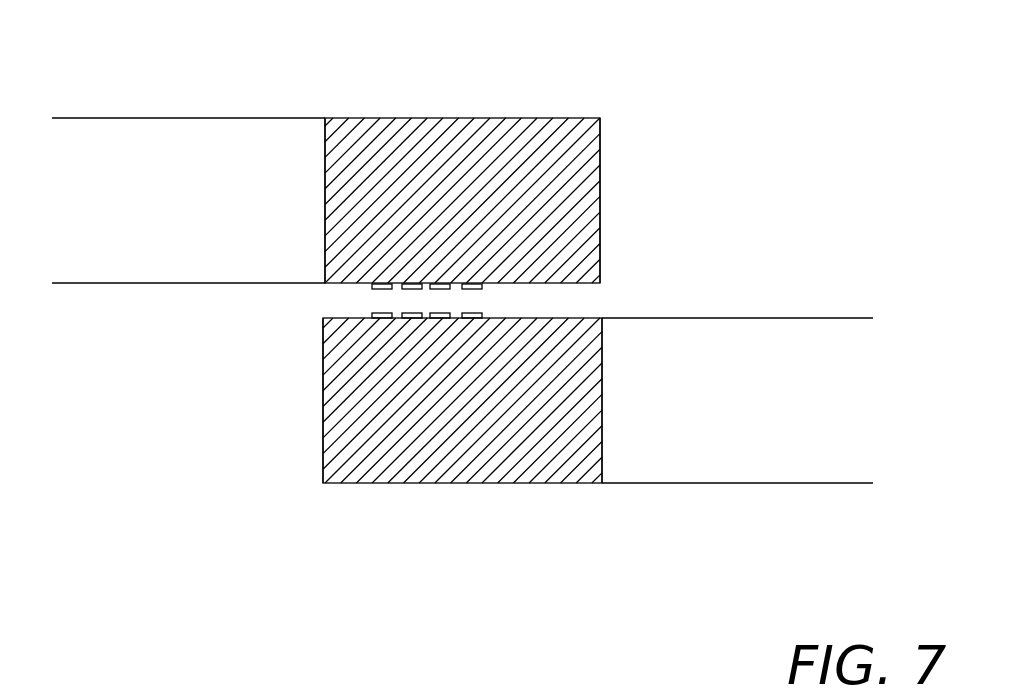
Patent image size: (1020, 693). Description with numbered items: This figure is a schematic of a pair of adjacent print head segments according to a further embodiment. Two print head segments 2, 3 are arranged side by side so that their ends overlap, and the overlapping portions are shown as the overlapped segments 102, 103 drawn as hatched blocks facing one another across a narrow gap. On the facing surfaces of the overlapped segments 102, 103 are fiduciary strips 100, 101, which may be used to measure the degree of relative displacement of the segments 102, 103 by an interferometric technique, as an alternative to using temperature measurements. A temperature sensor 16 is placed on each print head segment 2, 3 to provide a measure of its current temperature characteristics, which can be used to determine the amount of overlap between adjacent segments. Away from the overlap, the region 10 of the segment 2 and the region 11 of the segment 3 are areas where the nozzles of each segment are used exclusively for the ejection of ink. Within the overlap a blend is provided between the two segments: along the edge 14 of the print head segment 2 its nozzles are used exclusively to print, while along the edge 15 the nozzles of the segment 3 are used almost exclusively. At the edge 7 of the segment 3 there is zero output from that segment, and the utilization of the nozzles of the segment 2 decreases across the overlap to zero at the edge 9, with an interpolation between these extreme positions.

The print head segment 2 is at (130, 284).
The print head segment 3 is at (675, 485).
The edge 7 is at (323, 408).
The edge 9 is at (604, 220).
The region 10 is at (189, 215).
The region 11 is at (849, 428).
The edge 14 is at (325, 147).
The edge 15 is at (602, 417).
The temperature sensor 16 is at (192, 160).
The fiduciary strip 100 is at (402, 320).
The fiduciary strip 101 is at (472, 284).
The overlapped segment 102 is at (499, 152).
The overlapped segment 103 is at (466, 438).